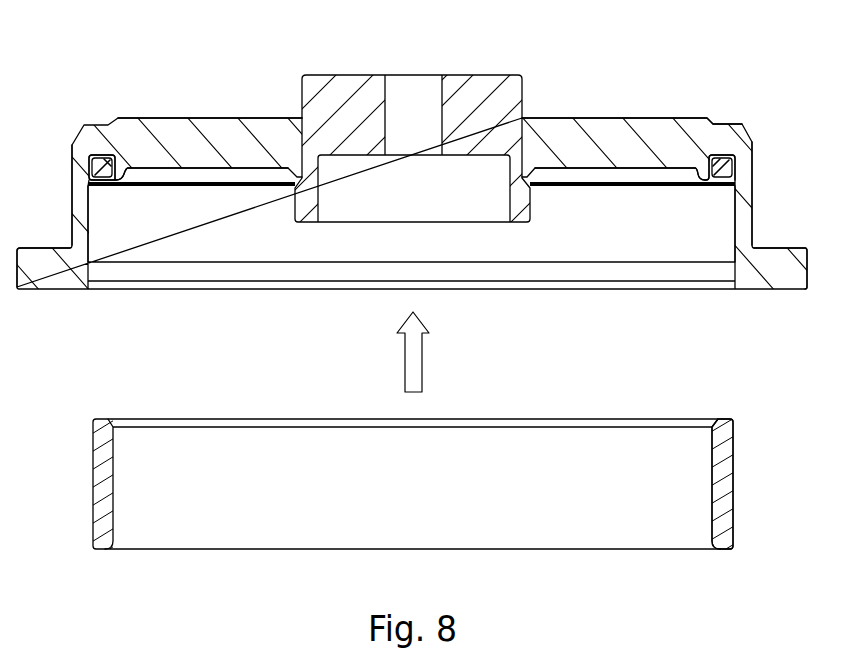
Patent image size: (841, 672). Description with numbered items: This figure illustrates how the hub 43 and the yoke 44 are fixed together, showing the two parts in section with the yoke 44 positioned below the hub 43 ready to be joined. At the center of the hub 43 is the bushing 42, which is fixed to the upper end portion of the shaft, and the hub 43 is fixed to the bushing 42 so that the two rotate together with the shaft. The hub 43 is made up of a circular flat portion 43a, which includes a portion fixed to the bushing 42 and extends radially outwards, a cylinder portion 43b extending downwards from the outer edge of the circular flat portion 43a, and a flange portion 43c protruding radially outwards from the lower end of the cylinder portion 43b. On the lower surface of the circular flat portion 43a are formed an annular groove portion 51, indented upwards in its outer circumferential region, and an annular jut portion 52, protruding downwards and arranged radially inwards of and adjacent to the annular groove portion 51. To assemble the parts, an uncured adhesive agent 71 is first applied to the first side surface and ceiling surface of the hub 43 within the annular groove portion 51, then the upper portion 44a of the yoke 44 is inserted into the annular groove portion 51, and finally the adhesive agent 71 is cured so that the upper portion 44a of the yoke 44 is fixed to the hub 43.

The bushing 42 is at (493, 93).
The hub 43 is at (420, 163).
The circular flat portion 43a is at (662, 135).
The cylinder portion 43b is at (756, 165).
The flange portion 43c is at (783, 258).
The yoke 44 is at (445, 500).
The upper portion of the yoke 44a is at (736, 421).
The annular groove portion 51 is at (105, 188).
The annular jut portion 52 is at (128, 168).
The adhesive agent 71 is at (92, 173).